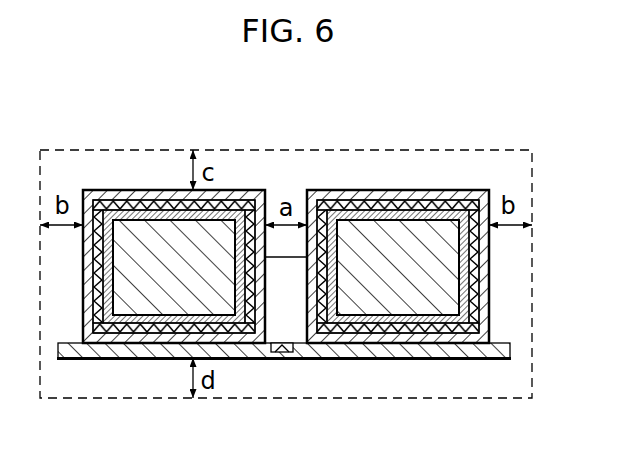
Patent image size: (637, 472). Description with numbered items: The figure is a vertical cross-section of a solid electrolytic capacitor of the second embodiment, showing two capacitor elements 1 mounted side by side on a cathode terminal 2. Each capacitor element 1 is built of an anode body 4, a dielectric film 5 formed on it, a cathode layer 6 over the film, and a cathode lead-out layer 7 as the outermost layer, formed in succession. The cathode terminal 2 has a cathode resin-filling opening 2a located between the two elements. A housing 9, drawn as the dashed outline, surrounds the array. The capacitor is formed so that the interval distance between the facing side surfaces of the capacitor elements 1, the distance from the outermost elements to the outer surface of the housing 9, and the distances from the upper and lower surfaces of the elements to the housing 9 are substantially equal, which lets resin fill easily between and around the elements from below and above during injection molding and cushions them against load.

The capacitor element 1 is at (284, 272).
The cathode terminal 2 is at (503, 358).
The cathode resin-filling opening 2a is at (283, 358).
The anode body 4 is at (182, 290).
The dielectric film 5 is at (142, 327).
The cathode layer 6 is at (225, 330).
The cathode lead-out layer 7 is at (107, 345).
The housing 9 is at (518, 175).